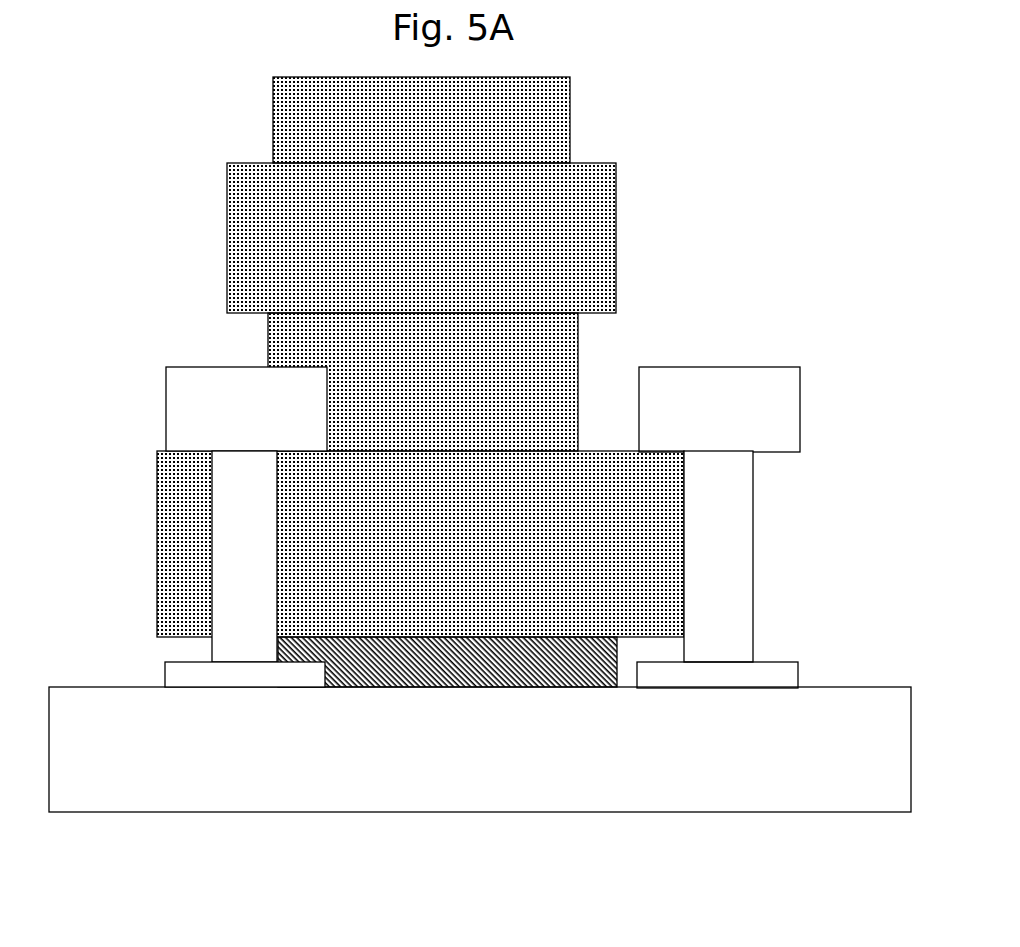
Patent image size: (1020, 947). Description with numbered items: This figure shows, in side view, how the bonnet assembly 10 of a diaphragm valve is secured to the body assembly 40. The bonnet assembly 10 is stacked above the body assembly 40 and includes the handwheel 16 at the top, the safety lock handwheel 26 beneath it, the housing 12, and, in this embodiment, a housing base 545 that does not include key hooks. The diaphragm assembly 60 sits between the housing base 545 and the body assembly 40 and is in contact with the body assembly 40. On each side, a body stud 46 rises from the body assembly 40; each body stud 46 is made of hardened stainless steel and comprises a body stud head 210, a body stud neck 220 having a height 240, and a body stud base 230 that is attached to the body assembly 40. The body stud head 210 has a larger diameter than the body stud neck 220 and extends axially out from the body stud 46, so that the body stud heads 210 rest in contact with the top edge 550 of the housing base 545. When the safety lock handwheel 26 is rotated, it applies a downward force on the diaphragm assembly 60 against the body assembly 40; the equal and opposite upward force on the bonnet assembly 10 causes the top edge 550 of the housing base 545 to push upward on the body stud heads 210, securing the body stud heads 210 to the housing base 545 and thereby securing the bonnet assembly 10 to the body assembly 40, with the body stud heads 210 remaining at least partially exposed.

The bonnet assembly 10 is at (147, 62).
The housing 12 is at (423, 382).
The handwheel 16 is at (421, 120).
The safety lock handwheel 26 is at (421, 238).
The body assembly 40 is at (922, 835).
The body stud 46 is at (245, 555).
The diaphragm assembly 60 is at (447, 662).
The body stud head 210 is at (778, 426).
The body stud neck 220 is at (733, 590).
The body stud base 230 is at (693, 682).
The height 240 is at (807, 450).
The housing base 545 is at (420, 544).
The top edge 550 is at (663, 452).